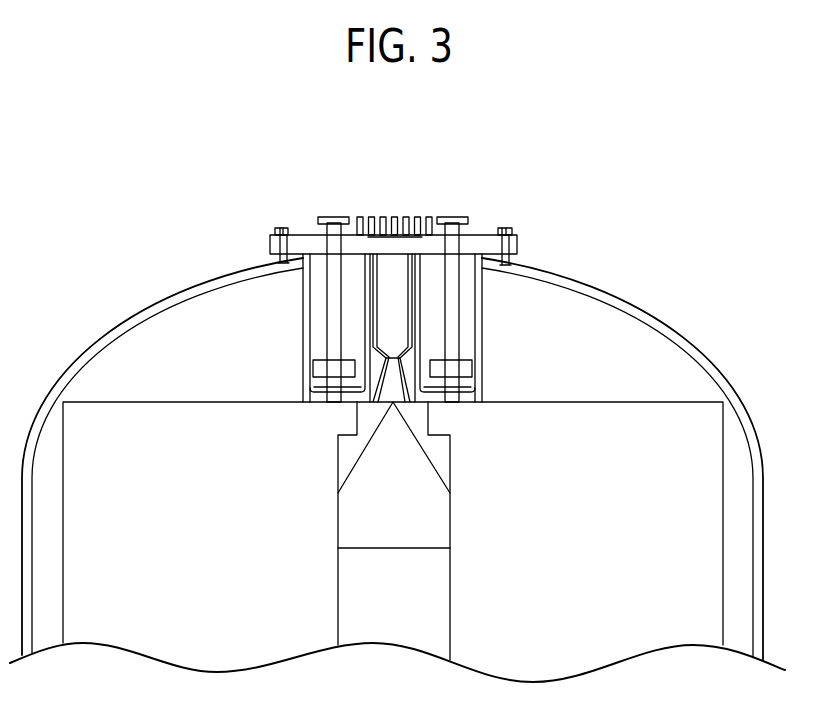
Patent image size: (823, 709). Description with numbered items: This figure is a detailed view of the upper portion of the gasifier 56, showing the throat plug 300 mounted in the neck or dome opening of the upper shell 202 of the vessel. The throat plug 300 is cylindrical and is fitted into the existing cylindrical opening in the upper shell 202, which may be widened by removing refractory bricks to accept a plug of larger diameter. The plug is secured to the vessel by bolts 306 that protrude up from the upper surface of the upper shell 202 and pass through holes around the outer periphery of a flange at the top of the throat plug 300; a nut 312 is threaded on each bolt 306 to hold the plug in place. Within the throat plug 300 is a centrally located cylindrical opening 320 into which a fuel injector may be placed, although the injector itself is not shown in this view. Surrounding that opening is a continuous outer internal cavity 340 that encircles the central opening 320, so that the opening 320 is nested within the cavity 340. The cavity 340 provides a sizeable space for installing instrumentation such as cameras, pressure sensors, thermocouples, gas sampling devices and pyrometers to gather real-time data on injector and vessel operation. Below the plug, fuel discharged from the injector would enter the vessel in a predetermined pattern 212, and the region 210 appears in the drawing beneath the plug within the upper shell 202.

The gasifier 56 is at (185, 178).
The upper shell 202 is at (136, 312).
The conical deflector 210 is at (370, 405).
The predetermined pattern 212 is at (443, 510).
The throat plug 300 is at (386, 240).
The bolt 306 is at (280, 243).
The nut 312 is at (278, 228).
The central cylindrical opening 320 is at (393, 267).
The outer internal cavity 340 is at (318, 328).